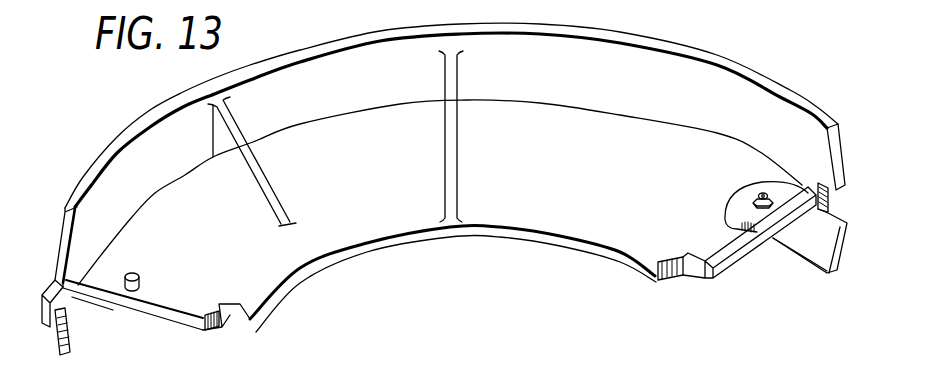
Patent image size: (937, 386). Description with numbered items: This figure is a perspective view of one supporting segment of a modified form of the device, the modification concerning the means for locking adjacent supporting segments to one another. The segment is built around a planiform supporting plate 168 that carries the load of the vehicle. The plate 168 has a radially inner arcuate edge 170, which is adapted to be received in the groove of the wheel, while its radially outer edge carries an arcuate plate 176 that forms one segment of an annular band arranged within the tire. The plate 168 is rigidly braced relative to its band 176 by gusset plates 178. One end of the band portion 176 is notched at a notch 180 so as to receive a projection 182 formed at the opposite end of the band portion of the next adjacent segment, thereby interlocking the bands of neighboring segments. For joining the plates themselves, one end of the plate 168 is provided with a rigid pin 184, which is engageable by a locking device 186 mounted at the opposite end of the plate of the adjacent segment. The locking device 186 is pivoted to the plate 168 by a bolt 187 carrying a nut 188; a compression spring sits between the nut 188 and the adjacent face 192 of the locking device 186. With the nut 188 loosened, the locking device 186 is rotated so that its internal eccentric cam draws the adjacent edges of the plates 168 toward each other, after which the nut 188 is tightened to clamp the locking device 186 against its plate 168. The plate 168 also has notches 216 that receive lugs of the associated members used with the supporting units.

The planiform supporting plate 168 is at (528, 243).
The radially inner arcuate edge 170 is at (455, 238).
The arcuate plate 176 is at (726, 82).
The gusset plates 178 is at (266, 168).
The notch 180 is at (830, 195).
The projection 182 is at (44, 326).
The rigid pin 184 is at (140, 279).
The locking device 186 is at (744, 183).
The bolt 187 is at (766, 194).
The nut 188 is at (757, 196).
The adjacent face of the locking device 192 is at (733, 209).
The notches 216 is at (214, 331).